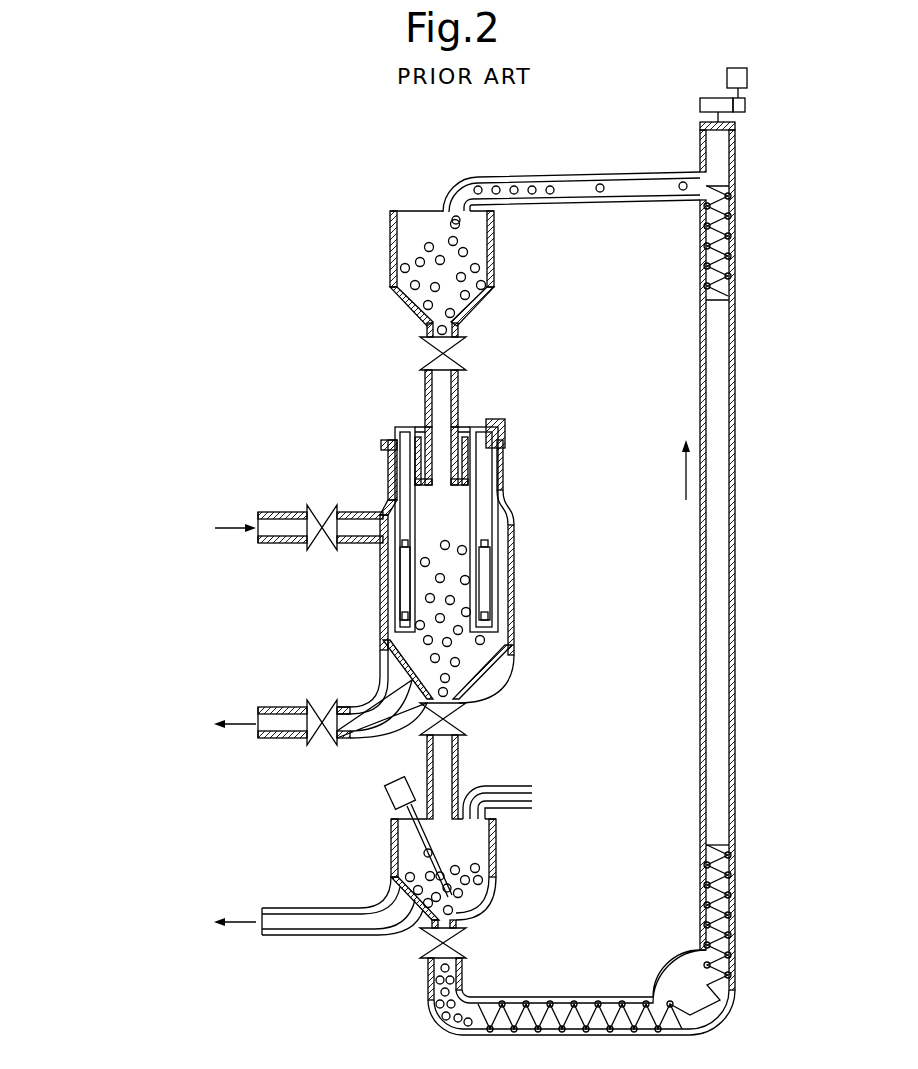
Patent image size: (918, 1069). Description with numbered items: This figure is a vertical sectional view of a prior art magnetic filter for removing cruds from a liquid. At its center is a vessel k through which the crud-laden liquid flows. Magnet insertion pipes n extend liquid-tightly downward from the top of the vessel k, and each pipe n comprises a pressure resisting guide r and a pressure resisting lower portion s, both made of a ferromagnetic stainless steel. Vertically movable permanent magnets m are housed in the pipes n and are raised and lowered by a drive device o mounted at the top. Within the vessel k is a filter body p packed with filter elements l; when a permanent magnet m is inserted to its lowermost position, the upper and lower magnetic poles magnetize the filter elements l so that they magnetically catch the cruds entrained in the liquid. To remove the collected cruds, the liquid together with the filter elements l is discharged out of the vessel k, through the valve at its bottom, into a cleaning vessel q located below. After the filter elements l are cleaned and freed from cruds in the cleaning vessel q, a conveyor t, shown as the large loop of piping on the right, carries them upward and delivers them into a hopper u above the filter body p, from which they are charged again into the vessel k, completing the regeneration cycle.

The filter elements l is at (430, 236).
The hopper u is at (495, 268).
The drive device o is at (503, 422).
The pressure resisting guide r is at (500, 468).
The magnet insertion pipes n is at (512, 484).
The permanent magnets m is at (488, 575).
The vessel k is at (513, 585).
The filter body p is at (525, 605).
The pressure resisting lower portion s is at (398, 645).
The conveyor t is at (748, 513).
The cleaning vessel q is at (505, 890).